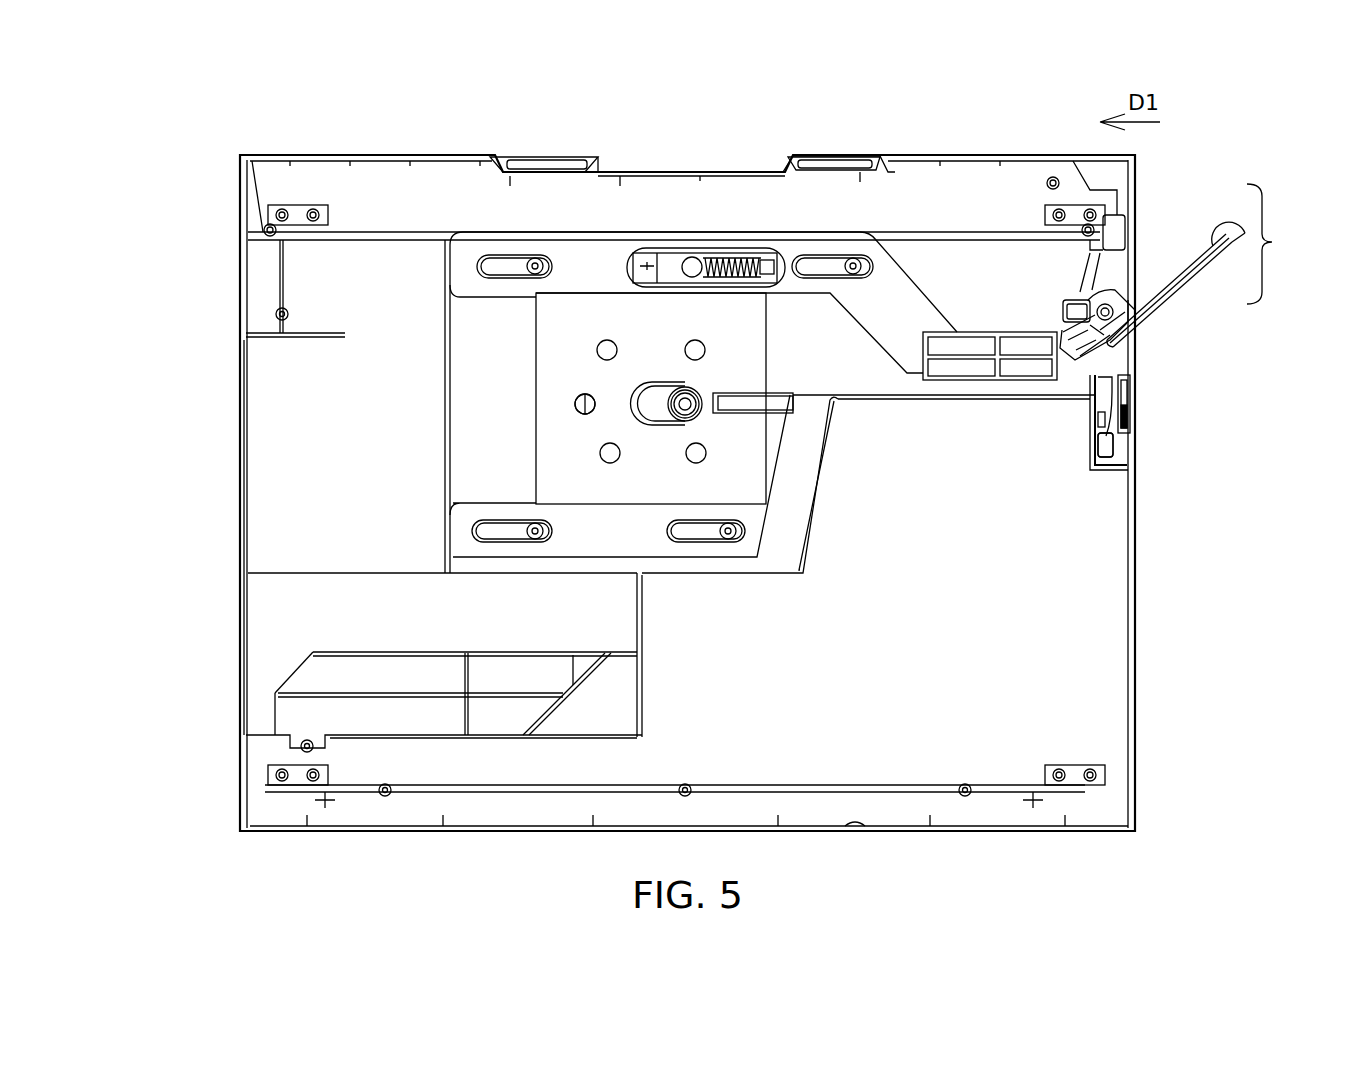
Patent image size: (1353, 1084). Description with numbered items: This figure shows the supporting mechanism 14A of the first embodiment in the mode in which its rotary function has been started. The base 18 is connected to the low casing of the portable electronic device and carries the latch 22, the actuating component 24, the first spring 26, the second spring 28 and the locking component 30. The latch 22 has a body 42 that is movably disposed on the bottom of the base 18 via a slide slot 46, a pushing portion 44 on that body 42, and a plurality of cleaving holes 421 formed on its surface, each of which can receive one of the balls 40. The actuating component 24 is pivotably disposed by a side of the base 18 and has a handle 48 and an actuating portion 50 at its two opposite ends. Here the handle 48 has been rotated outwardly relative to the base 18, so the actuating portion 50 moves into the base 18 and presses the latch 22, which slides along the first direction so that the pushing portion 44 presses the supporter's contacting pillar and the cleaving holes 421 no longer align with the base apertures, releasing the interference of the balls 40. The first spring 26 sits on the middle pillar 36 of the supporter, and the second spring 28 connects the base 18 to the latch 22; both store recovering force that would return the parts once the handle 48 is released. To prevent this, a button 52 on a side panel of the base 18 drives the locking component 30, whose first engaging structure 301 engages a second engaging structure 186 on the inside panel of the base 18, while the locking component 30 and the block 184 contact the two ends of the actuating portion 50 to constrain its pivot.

The supporting mechanism 14A is at (200, 275).
The base 18 is at (290, 482).
The latch 22 is at (845, 408).
The actuating component 24 is at (1272, 242).
The first spring 26 is at (680, 425).
The second spring 28 is at (725, 255).
The locking component 30 is at (1115, 415).
The middle pillar 36 is at (690, 388).
The balls 40 is at (588, 416).
The body 42 is at (555, 342).
The pushing portion 44 is at (765, 394).
The slide slot 46 is at (490, 265).
The handle 48 is at (1225, 240).
The actuating portion 50 is at (1088, 300).
The button 52 is at (1125, 450).
The block 184 is at (1074, 298).
The second engaging structure 186 is at (1090, 420).
The first engaging structure 301 is at (1106, 458).
The cleaving holes 421 is at (603, 338).